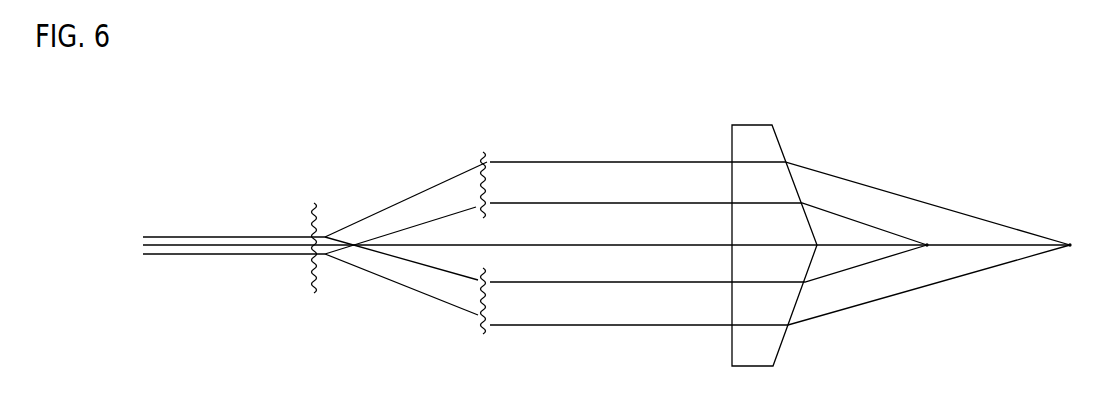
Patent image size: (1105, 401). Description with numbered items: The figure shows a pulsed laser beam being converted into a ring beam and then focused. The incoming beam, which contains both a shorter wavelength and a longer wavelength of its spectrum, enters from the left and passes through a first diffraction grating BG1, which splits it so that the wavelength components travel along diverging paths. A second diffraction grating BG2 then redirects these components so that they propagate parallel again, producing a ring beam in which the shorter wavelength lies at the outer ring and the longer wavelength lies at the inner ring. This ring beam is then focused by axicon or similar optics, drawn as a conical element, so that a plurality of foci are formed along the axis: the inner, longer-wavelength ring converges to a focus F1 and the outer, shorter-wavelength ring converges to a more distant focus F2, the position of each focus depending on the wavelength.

The first diffraction grating BG1 is at (315, 282).
The second diffraction grating BG2 is at (486, 267).
The first focus F1 is at (946, 260).
The second focus F2 is at (1085, 260).